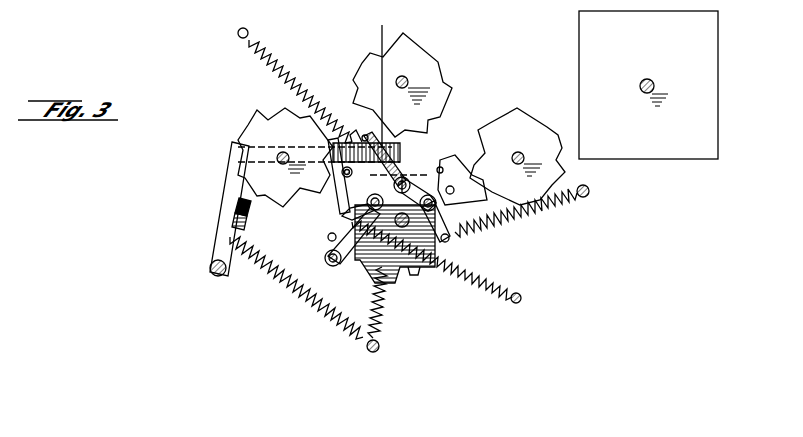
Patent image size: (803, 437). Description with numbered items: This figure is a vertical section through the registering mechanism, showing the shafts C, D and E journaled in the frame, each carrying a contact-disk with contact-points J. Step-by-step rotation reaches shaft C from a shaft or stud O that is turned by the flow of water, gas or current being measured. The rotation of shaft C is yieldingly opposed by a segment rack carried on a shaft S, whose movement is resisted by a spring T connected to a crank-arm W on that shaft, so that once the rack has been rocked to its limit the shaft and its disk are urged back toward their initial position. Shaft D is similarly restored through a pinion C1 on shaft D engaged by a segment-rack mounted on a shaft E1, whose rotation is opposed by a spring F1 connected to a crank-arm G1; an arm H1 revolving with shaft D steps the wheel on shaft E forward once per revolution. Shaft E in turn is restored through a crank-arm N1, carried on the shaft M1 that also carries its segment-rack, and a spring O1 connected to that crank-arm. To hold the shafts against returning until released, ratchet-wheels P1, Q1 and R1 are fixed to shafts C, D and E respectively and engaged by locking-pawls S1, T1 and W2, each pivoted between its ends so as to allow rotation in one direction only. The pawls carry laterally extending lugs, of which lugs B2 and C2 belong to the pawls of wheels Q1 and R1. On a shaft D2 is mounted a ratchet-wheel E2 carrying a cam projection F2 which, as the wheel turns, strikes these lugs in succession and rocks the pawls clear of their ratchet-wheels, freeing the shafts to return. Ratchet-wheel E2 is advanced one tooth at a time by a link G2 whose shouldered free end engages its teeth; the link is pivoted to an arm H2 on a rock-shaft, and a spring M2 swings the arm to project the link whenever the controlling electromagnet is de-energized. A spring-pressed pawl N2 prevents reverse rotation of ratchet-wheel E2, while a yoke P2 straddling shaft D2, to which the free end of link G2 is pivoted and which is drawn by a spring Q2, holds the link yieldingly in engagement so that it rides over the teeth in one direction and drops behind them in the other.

The shaft or stud O is at (654, 83).
The ratchet-wheel Q1 is at (397, 47).
The shaft D is at (402, 82).
The link G2 is at (376, 40).
The shaft C is at (518, 158).
The ratchet-wheel P1 is at (540, 132).
The locking-pawl S1 is at (471, 174).
The shaft E is at (283, 157).
The crank-arm W is at (325, 150).
The ratchet-wheel R1 is at (246, 94).
The spring F1 is at (295, 85).
The locking-pawl T1 is at (348, 128).
The arm H2 is at (232, 200).
The contact-points J is at (212, 280).
The shaft E1 is at (402, 185).
The arm H1 is at (430, 187).
The lug or projection B2 is at (401, 155).
The pinion C1 is at (325, 237).
The lug or projection C2 is at (301, 256).
The crank-arm G1 is at (296, 288).
The spring M2 is at (306, 205).
The crank-arm N1 is at (322, 200).
The spring-pressed pawl N2 is at (342, 225).
The rod M1 is at (362, 225).
The ratchet-wheel E2 is at (373, 279).
The lug or cam projection F2 is at (516, 219).
The spring T is at (470, 200).
The shaft S is at (445, 226).
The rod W2 is at (440, 230).
The spring O1 is at (418, 275).
The yoke P2 is at (432, 275).
The shaft D2 is at (410, 270).
The spring Q2 is at (398, 270).